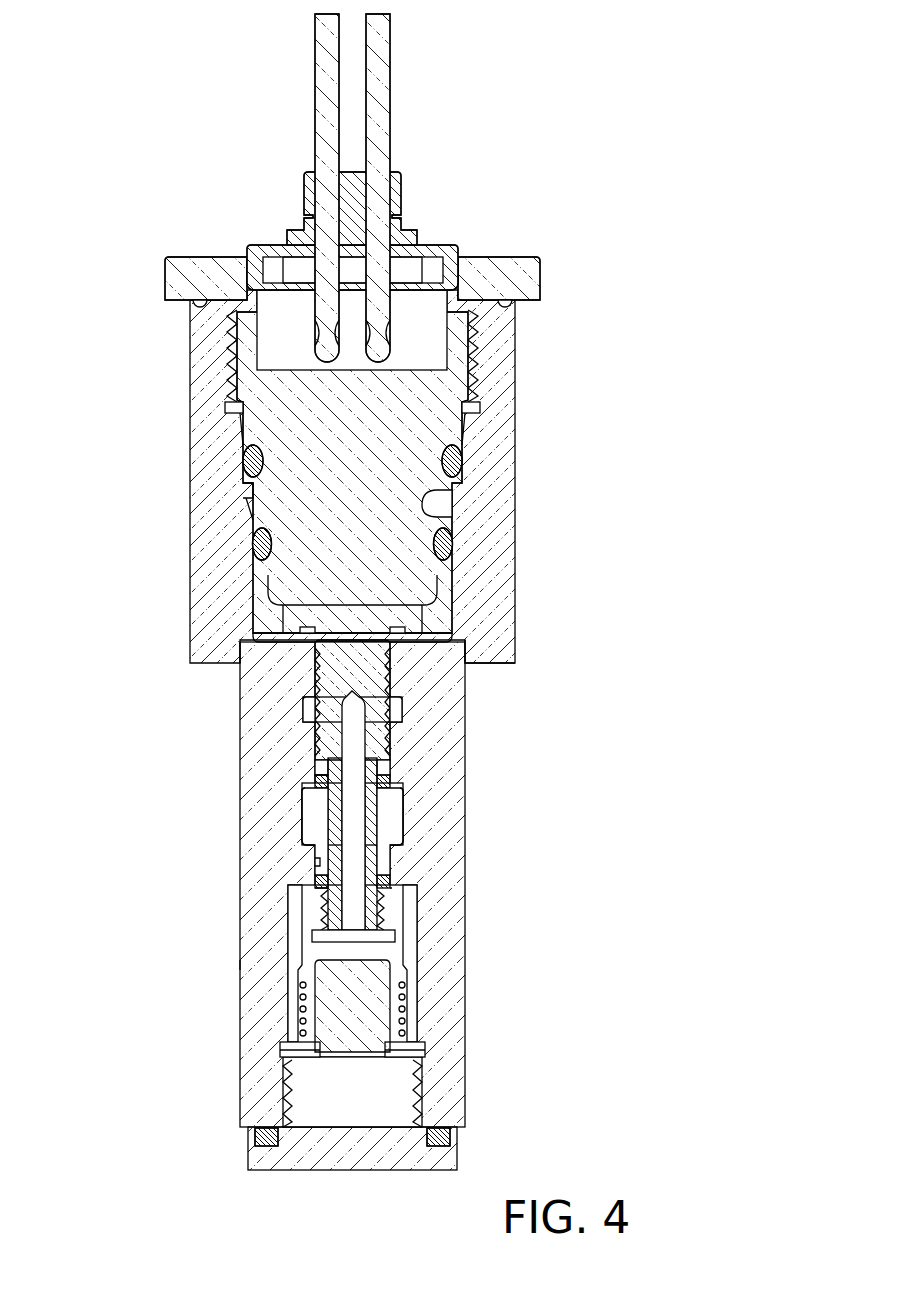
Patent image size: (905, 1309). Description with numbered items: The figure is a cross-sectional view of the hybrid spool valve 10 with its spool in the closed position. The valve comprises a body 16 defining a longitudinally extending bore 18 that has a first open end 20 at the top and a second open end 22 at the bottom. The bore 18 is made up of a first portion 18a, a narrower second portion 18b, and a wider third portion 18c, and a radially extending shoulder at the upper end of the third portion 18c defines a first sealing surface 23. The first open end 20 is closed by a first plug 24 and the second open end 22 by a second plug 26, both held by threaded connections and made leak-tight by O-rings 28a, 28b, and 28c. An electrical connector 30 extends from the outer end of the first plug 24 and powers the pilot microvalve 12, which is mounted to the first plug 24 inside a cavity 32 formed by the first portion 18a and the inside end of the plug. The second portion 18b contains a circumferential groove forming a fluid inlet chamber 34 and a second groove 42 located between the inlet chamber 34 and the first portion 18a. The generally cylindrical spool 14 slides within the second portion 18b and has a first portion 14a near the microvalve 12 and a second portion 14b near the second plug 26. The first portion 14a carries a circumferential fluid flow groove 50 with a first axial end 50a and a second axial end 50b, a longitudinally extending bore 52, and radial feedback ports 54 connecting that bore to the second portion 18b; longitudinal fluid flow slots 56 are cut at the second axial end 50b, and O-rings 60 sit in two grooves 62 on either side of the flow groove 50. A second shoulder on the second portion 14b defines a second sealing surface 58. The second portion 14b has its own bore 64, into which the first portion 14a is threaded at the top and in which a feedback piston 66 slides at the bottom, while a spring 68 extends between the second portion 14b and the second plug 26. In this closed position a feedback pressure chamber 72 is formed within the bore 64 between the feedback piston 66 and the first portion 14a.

The hybrid spool valve 10 is at (133, 100).
The pilot microvalve 12 is at (442, 614).
The spool 14 is at (262, 683).
The first portion of the spool 14a is at (297, 660).
The second portion of the spool 14b is at (297, 962).
The body 16 is at (207, 460).
The longitudinally extending bore 18 is at (480, 400).
The first portion of the bore 18a is at (228, 396).
The second portion of the bore 18b is at (448, 660).
The third portion of the bore 18c is at (297, 930).
The first open end 20 is at (470, 290).
The second open end 22 is at (415, 1100).
The first sealing surface 23 is at (410, 900).
The first plug 24 is at (178, 278).
The second plug 26 is at (297, 1167).
The O-ring 28a is at (255, 1137).
The O-ring 28b is at (452, 545).
The O-ring 28c is at (462, 462).
The electrical connector 30 is at (302, 197).
The cavity 32 is at (455, 628).
The fluid inlet chamber 34 is at (380, 810).
The second groove 42 is at (318, 712).
The fluid flow groove 50 is at (318, 822).
The first axial end of the fluid flow groove 50a is at (310, 803).
The second axial end of the fluid flow groove 50b is at (397, 830).
The longitudinally extending bore 52 is at (362, 740).
The feedback port 54 is at (395, 703).
The fluid flow slot 56 is at (317, 857).
The second sealing surface 58 is at (395, 885).
The O-ring 60 is at (316, 780).
The groove 62 is at (392, 782).
The longitudinally extending bore 64 is at (310, 1040).
The feedback piston 66 is at (348, 1053).
The spring 68 is at (405, 996).
The feedback pressure chamber 72 is at (375, 952).